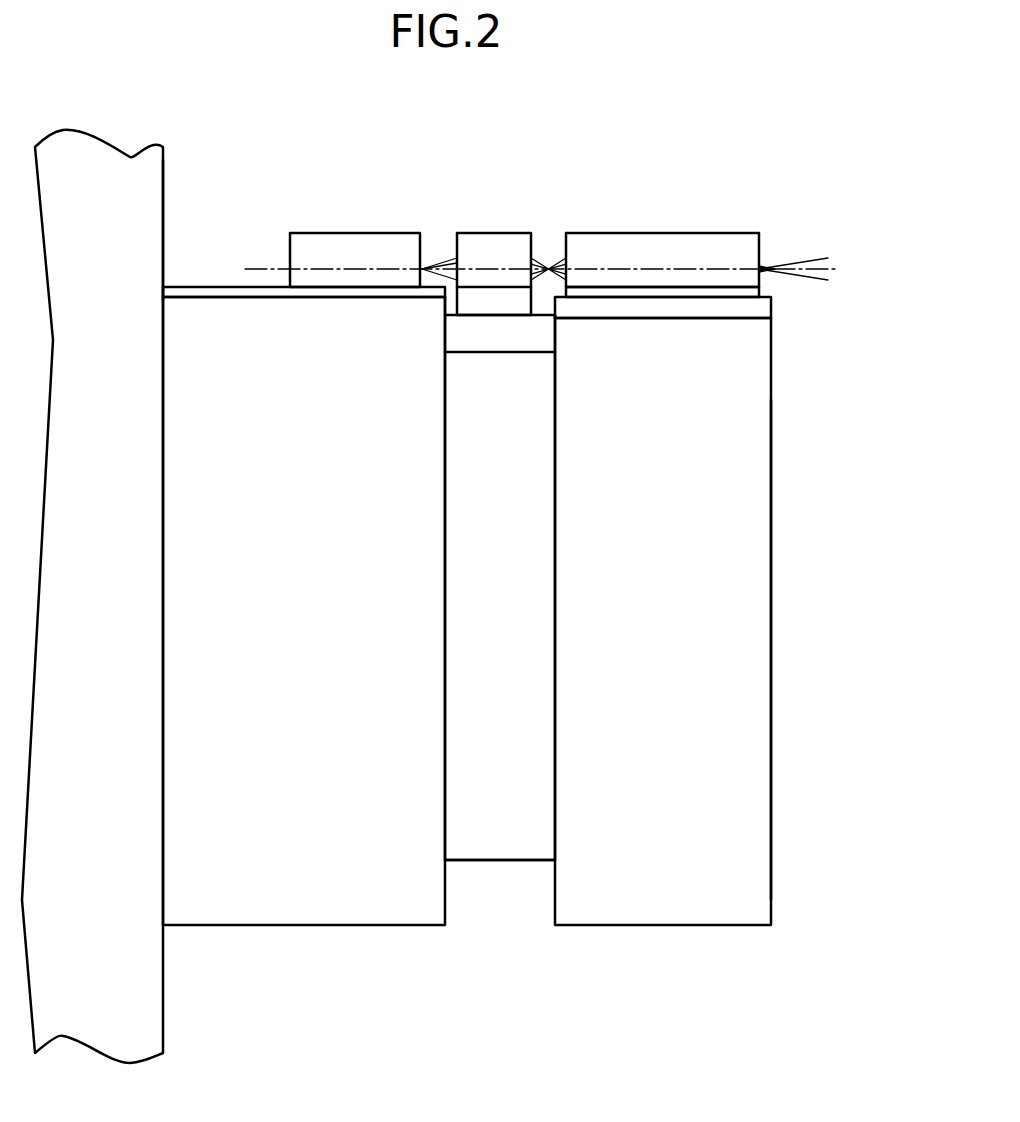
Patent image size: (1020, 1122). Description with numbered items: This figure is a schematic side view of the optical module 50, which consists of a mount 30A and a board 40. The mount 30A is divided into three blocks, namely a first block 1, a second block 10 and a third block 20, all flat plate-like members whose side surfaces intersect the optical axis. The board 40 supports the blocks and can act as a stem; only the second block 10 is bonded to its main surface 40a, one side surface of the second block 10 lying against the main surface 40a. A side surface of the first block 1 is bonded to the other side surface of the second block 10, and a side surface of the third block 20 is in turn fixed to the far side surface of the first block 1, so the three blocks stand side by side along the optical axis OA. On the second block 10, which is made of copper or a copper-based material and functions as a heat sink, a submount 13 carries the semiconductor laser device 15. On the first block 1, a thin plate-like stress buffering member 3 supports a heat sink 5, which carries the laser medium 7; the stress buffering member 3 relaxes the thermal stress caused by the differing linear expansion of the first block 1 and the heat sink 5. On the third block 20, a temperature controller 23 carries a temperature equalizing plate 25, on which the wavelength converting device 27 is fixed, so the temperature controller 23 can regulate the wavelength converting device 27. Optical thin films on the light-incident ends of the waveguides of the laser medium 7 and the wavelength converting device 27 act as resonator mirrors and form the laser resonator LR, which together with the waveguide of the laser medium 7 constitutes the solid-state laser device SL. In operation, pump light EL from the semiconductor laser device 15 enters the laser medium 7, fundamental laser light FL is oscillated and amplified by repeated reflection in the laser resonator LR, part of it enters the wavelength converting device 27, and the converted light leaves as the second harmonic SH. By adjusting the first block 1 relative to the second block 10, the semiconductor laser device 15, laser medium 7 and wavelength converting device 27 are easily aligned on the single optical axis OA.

The first block 1 is at (498, 852).
The stress buffering member 3 is at (497, 341).
The heat sink 5 is at (466, 306).
The laser medium 7 is at (466, 232).
The second block 10 is at (305, 926).
The submount 13 is at (205, 286).
The semiconductor laser device 15 is at (308, 232).
The third block 20 is at (669, 926).
The temperature controller 23 is at (706, 312).
The temperature equalizing plate 25 is at (624, 290).
The wavelength converting device 27 is at (596, 232).
The mount 30A is at (778, 637).
The board 40 is at (124, 152).
The main surface 40a is at (164, 186).
The optical module 50 is at (732, 151).
The solid-state laser device SL is at (517, 231).
The pump light EL is at (434, 259).
The fundamental laser light FL is at (551, 259).
The laser resonator LR is at (543, 283).
The second harmonic SH is at (797, 262).
The optical axis OA is at (833, 269).